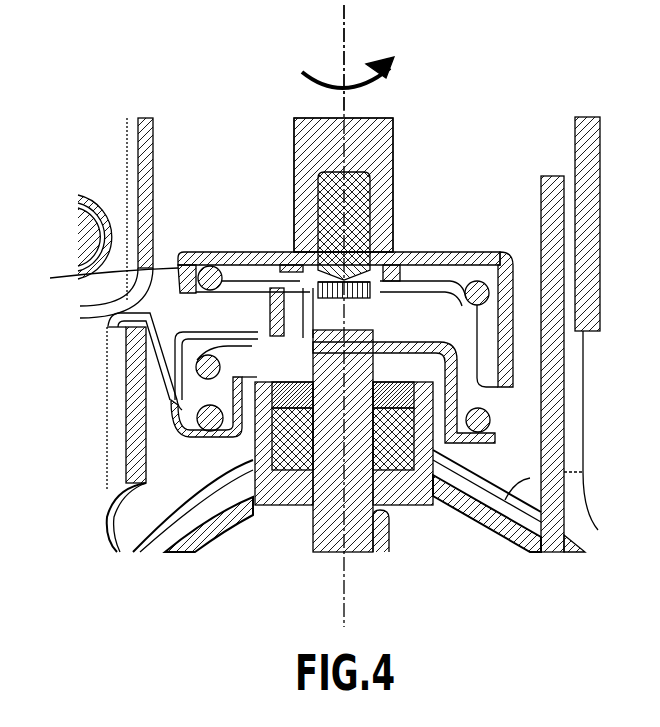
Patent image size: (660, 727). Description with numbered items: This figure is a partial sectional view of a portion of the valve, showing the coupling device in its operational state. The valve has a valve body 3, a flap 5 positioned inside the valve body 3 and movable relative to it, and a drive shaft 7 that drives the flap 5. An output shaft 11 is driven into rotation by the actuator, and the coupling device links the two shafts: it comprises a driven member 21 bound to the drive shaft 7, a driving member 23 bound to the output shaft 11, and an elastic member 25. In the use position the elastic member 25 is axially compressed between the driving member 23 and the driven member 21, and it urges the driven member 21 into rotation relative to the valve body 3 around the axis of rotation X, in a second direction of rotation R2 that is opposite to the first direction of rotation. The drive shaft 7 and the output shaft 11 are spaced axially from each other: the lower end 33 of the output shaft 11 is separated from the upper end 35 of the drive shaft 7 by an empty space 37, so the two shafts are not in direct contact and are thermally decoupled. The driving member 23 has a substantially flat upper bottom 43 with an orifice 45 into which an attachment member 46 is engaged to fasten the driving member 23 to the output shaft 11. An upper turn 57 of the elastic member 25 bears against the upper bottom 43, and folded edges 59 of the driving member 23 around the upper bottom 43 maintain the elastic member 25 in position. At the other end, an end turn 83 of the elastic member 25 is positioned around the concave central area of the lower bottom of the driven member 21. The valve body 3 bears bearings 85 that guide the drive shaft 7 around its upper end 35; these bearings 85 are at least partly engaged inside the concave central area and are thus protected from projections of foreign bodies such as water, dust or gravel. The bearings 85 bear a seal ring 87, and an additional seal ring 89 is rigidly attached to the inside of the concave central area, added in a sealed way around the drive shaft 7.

The axis of rotation X is at (344, 7).
The second direction of rotation R2 is at (300, 73).
The valve body 3 is at (545, 484).
The flap 5 is at (390, 540).
The drive shaft 7 is at (325, 527).
The output shaft 11 is at (294, 131).
The driven member 21 is at (474, 383).
The driving member 23 is at (196, 243).
The elastic member 25 is at (228, 262).
The lower end of the output shaft 33 is at (390, 150).
The upper end of the drive shaft 35 is at (388, 342).
The empty space 37 is at (366, 305).
The upper bottom 43 is at (262, 252).
The orifice 45 is at (373, 252).
The attachment member 46 is at (428, 266).
The upper turn 57 is at (434, 283).
The folded edges 59 is at (198, 283).
The end turn 83 is at (492, 421).
The bearings 85 is at (145, 463).
The seal ring 87 is at (200, 418).
The additional seal ring 89 is at (168, 383).